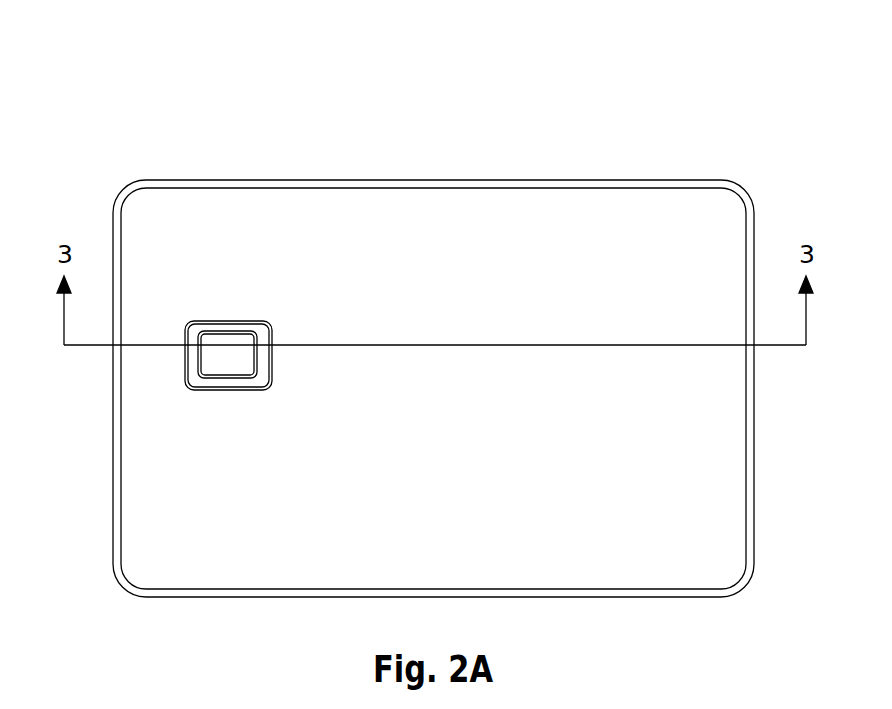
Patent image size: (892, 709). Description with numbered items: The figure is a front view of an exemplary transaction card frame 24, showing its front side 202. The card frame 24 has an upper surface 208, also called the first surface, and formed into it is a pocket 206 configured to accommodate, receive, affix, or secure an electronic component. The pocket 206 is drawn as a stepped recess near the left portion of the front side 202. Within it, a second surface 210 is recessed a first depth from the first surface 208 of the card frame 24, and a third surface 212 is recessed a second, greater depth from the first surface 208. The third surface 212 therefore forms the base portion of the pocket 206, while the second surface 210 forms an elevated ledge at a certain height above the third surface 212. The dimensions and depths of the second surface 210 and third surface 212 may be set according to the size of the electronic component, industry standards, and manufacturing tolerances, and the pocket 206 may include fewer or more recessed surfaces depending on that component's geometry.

The transaction card frame 24 is at (428, 331).
The front side 202 is at (162, 180).
The pocket 206 is at (270, 332).
The upper surface 208 is at (462, 450).
The second surface 210 is at (265, 360).
The third surface 212 is at (230, 352).